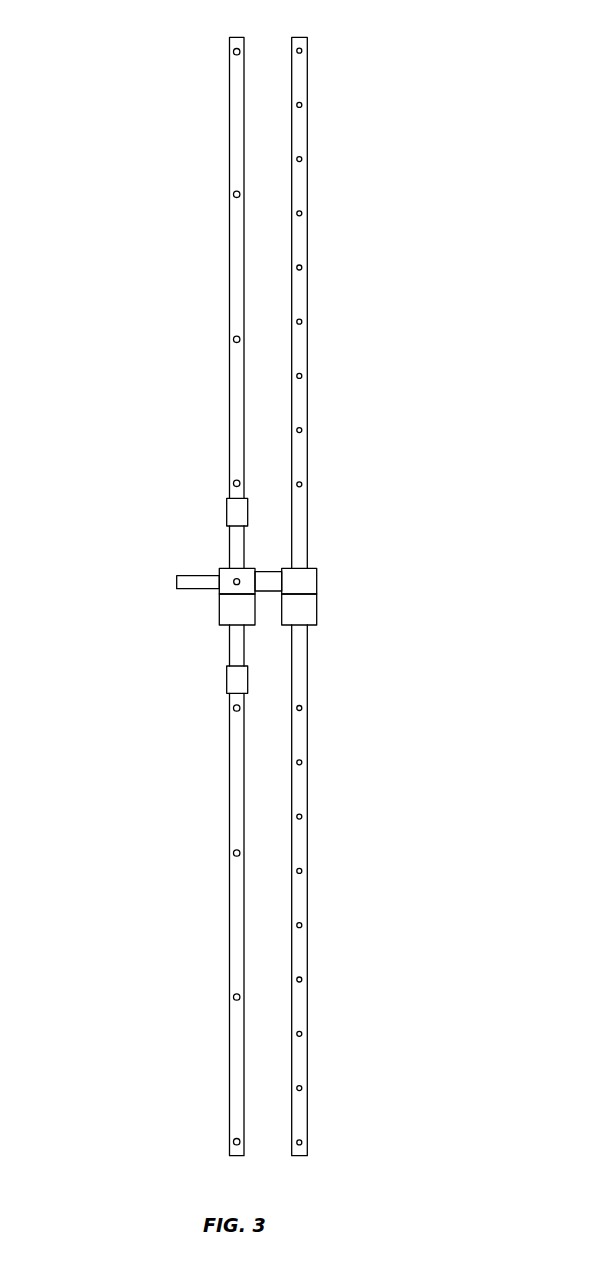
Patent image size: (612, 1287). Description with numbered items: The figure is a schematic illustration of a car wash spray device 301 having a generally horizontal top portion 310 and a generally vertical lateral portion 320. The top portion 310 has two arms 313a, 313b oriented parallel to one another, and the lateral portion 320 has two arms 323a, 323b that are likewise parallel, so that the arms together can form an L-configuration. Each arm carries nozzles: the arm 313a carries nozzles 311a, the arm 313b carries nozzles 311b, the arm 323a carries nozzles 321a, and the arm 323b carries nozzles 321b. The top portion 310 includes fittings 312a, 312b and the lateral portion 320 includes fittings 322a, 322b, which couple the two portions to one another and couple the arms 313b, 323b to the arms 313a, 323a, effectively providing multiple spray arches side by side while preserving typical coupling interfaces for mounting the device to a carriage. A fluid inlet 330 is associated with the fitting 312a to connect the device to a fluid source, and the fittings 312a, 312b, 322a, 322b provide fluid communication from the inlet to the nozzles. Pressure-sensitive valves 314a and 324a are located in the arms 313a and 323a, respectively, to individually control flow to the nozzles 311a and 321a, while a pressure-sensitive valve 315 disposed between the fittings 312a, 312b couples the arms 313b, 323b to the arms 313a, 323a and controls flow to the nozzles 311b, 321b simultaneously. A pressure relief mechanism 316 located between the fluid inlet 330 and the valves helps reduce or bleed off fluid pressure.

The car wash spray device 301 is at (180, 52).
The top portion 310 is at (345, 265).
The lateral portion 320 is at (347, 878).
The fluid inlet 330 is at (165, 580).
The nozzles 311a is at (232, 194).
The nozzles 311b is at (302, 213).
The arm 313a is at (229, 397).
The arm 313b is at (307, 397).
The pressure-sensitive valve 314a is at (227, 512).
The fitting 312a is at (222, 567).
The fitting 312b is at (318, 579).
The pressure-sensitive valve 315 is at (268, 571).
The pressure relief mechanism 316 is at (233, 583).
The fitting 322a is at (219, 613).
The fitting 322b is at (318, 606).
The arm 323a is at (229, 781).
The arm 323b is at (307, 781).
The pressure-sensitive valve 324a is at (227, 680).
The nozzles 321a is at (233, 997).
The nozzles 321b is at (302, 980).